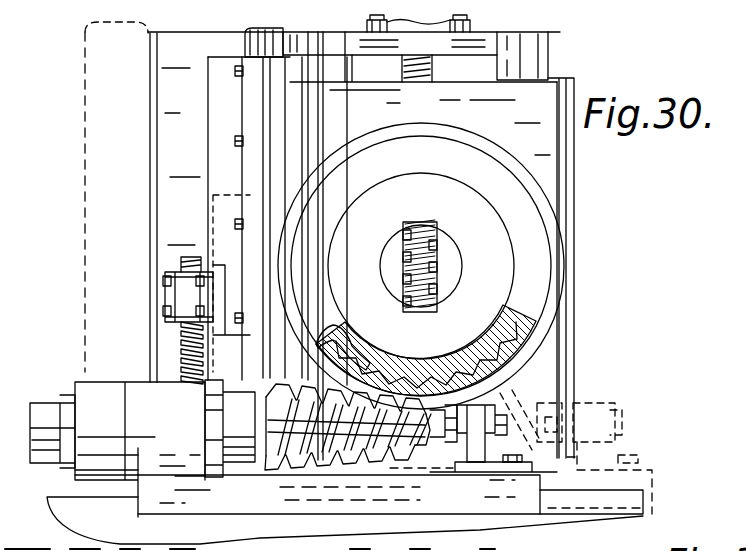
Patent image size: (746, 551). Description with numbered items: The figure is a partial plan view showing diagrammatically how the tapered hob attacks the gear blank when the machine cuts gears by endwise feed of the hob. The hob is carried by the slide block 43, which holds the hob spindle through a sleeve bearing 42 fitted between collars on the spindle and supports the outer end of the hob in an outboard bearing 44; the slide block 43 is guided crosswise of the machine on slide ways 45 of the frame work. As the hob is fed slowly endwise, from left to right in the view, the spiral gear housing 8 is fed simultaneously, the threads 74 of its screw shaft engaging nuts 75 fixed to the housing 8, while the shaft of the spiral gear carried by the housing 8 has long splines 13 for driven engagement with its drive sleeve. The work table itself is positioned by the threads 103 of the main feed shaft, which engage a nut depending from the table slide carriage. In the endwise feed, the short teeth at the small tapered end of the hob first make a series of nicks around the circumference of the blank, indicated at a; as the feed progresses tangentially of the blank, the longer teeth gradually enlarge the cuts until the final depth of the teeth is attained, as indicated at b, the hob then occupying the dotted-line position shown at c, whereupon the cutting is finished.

The splines 13 is at (247, 44).
The housing 8 is at (210, 185).
The nuts 75 is at (165, 290).
The threads 74 is at (183, 347).
The sleeve bearing 42 is at (143, 405).
The slide block 43 is at (160, 503).
The outboard bearing 44 is at (477, 418).
The slide ways 45 is at (593, 490).
The threads 103 is at (432, 260).
The nicks a is at (345, 363).
The final depth of teeth b is at (358, 358).
The hob position c is at (450, 476).